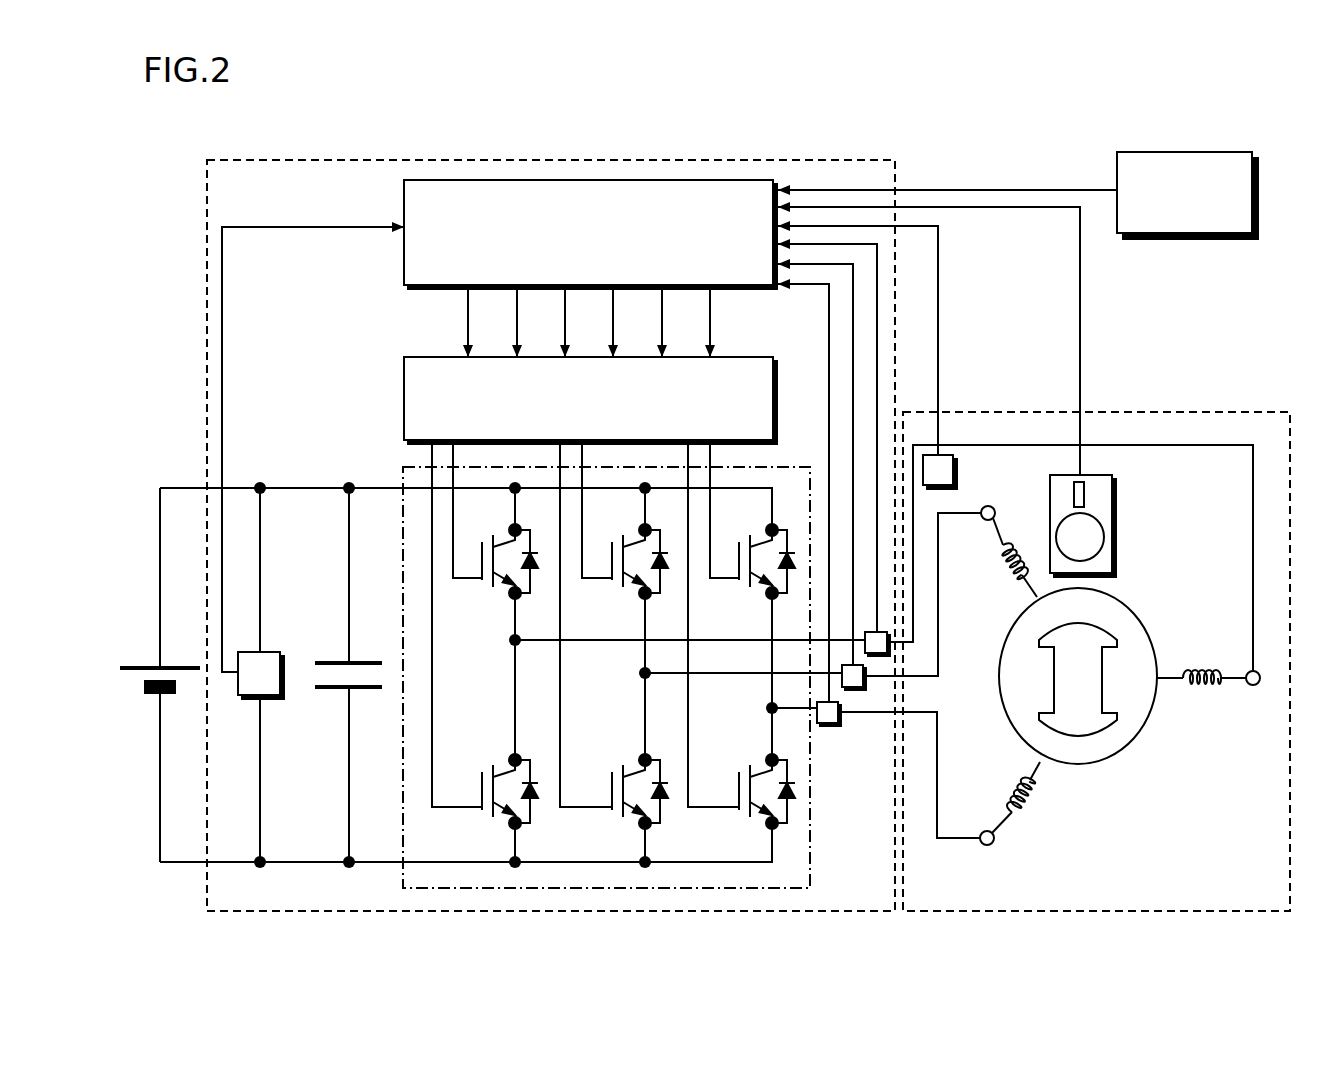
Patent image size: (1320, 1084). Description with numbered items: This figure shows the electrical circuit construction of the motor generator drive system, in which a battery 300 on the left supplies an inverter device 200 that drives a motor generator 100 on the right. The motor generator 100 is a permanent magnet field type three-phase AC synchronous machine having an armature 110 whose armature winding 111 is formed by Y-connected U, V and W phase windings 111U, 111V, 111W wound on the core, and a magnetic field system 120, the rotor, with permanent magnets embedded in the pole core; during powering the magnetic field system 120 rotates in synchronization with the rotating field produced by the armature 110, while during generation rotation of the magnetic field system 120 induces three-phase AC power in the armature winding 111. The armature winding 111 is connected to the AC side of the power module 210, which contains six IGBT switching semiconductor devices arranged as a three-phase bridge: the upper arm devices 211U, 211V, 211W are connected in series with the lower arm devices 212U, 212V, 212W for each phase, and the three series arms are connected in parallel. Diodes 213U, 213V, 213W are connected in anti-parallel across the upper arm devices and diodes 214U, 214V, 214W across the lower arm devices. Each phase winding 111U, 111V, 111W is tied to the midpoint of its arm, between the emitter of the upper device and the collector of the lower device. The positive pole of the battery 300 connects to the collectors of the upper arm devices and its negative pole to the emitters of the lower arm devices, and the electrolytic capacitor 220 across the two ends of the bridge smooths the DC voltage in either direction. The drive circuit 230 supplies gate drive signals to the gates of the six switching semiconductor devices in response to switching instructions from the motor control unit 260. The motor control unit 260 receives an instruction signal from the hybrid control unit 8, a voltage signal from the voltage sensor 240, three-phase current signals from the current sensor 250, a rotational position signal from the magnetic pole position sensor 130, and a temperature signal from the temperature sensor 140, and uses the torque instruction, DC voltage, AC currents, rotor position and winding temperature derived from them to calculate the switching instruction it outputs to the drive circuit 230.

The hybrid control unit 8 is at (1185, 152).
The motor generator 100 is at (1238, 412).
The armature 110 is at (1125, 602).
The armature winding 111 is at (1122, 762).
The U phase winding 111U is at (1205, 700).
The V phase winding 111V is at (1013, 815).
The W phase winding 111W is at (1008, 545).
The magnetic field system 120 is at (1103, 672).
The magnetic pole position sensor 130 is at (1112, 500).
The temperature sensor 140 is at (945, 455).
The inverter device 200 is at (413, 160).
The power module 210 is at (433, 888).
The switching semiconductor device 211U is at (491, 586).
The switching semiconductor device 211V is at (621, 586).
The switching semiconductor device 211W is at (748, 586).
The switching semiconductor device 212U is at (491, 818).
The switching semiconductor device 212V is at (621, 818).
The switching semiconductor device 212W is at (748, 818).
The diode 213U is at (529, 596).
The diode 213V is at (659, 596).
The diode 213W is at (789, 597).
The diode 214U is at (528, 760).
The diode 214V is at (658, 760).
The diode 214W is at (785, 760).
The electrolytic capacitor 220 is at (333, 660).
The drive circuit 230 is at (404, 400).
The voltage sensor 240 is at (281, 697).
The current sensor 250 is at (876, 653).
The motor control unit 260 is at (660, 180).
The battery 300 is at (136, 665).